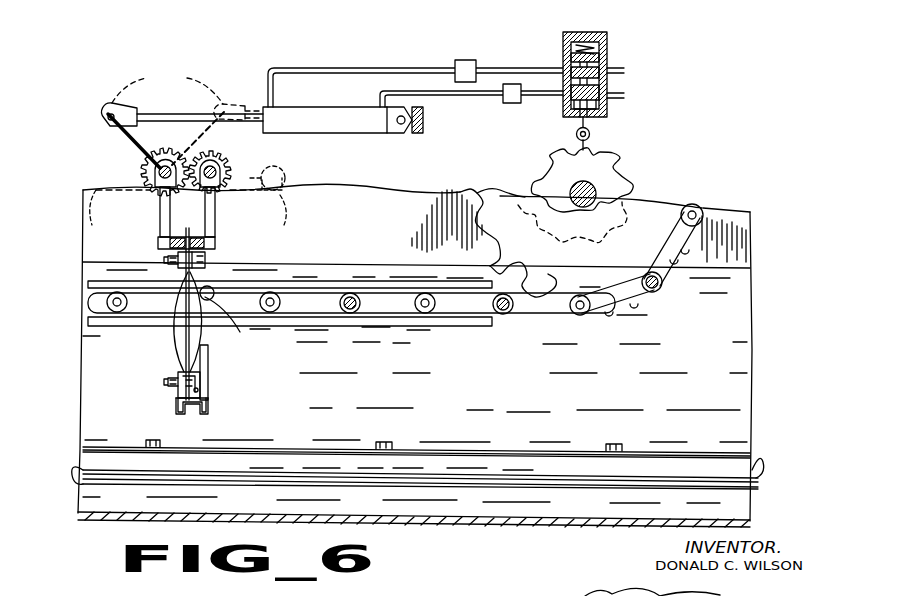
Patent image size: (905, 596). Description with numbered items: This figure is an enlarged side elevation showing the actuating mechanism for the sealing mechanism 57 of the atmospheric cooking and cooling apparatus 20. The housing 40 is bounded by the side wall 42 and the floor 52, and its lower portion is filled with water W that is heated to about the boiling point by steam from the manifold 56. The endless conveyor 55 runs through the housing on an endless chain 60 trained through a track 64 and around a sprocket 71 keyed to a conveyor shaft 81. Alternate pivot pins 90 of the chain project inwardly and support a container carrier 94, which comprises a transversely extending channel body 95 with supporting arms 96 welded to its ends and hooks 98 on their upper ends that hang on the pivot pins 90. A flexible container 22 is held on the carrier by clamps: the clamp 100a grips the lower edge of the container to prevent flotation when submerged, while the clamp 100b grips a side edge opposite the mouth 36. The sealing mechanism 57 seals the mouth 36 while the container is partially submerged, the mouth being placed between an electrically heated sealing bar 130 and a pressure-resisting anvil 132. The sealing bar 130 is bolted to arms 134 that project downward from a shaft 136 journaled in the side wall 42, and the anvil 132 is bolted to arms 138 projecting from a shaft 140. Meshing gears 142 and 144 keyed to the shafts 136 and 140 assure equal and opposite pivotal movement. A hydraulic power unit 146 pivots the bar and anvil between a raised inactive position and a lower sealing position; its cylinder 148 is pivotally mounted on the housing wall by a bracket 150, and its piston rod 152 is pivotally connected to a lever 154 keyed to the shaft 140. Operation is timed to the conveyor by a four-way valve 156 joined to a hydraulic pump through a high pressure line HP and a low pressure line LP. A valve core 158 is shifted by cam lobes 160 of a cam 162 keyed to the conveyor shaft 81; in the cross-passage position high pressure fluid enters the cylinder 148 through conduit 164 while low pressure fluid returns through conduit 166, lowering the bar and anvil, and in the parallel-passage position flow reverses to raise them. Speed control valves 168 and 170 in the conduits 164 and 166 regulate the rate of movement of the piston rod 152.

The atmospheric cooking and cooling apparatus 20 is at (735, 105).
The flexible container 22 is at (173, 337).
The mouth 36 is at (167, 253).
The housing 40 is at (746, 366).
The side wall 42 is at (83, 373).
The floor 52 is at (80, 517).
The endless conveyor 55 is at (708, 203).
The manifold 56 is at (80, 469).
The sealing mechanism 57 is at (68, 125).
The endless chain 60 is at (90, 299).
The track 64 is at (488, 330).
The sprocket 71 is at (650, 212).
The conveyor shaft 81 is at (594, 185).
The pivot pin 90 is at (350, 298).
The container carrier 94 is at (210, 410).
The channel body 95 is at (180, 410).
The supporting arm 96 is at (207, 362).
The hook 98 is at (224, 328).
The clamp 100a is at (185, 390).
The clamp 100b is at (203, 262).
The sealing bar 130 is at (200, 240).
The anvil 132 is at (165, 240).
The arm 134 is at (214, 212).
The shaft 136 is at (218, 167).
The arm 138 is at (163, 212).
The shaft 140 is at (157, 172).
The gear 142 is at (214, 156).
The gear 144 is at (148, 158).
The hydraulic power unit 146 is at (325, 122).
The cylinder 148 is at (370, 135).
The bracket 150 is at (423, 127).
The piston rod 152 is at (170, 114).
The lever 154 is at (167, 86).
The four-way valve 156 is at (602, 32).
The valve core 158 is at (607, 108).
The cam lobe 160 is at (590, 148).
The cam 162 is at (565, 165).
The conduit 164 is at (488, 97).
The conduit 166 is at (345, 67).
The speed control valve 168 is at (507, 104).
The speed control valve 170 is at (468, 64).
The high pressure line HP is at (624, 71).
The low pressure line LP is at (624, 96).
The water W is at (740, 270).